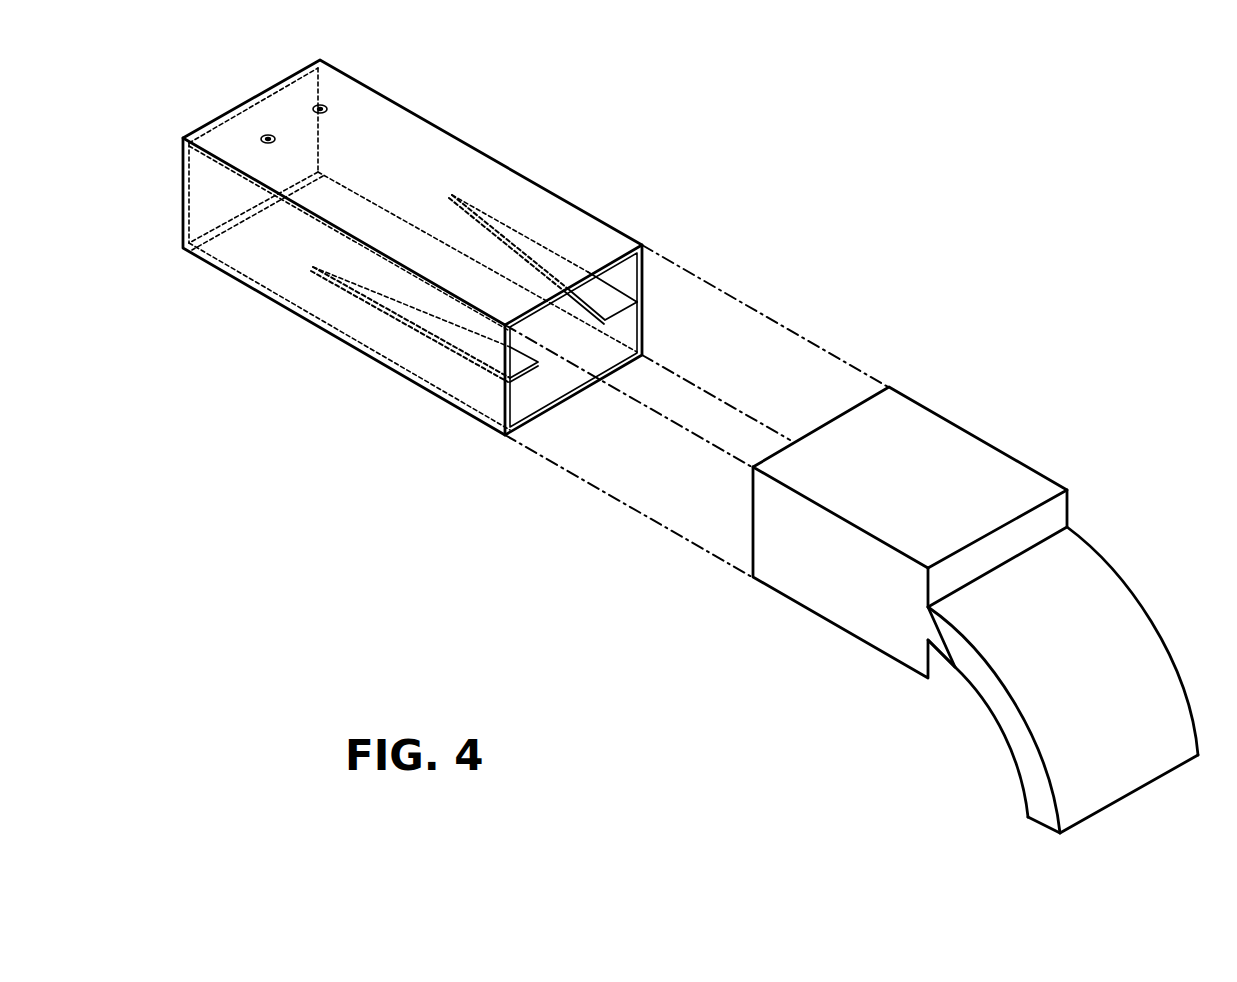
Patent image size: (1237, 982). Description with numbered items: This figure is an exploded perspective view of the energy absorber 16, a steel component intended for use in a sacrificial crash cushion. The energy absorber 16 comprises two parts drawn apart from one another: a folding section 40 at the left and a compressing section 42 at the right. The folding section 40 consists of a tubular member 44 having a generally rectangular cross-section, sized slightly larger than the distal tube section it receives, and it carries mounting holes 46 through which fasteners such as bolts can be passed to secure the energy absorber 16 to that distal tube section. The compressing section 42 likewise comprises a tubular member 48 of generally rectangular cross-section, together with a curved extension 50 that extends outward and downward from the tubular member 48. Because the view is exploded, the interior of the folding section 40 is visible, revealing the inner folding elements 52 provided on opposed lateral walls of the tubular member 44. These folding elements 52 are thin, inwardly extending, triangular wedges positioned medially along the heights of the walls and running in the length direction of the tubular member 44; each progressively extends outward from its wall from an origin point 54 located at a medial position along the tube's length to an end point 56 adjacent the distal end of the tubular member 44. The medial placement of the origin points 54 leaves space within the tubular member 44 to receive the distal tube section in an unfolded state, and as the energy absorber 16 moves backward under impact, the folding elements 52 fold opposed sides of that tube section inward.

The energy absorber 16 is at (1086, 166).
The folding section 40 is at (535, 117).
The compressing section 42 is at (1093, 452).
The tubular member 44 is at (330, 312).
The mounting holes 46 is at (316, 106).
The tubular member 48 is at (835, 608).
The curved extension 50 is at (1196, 609).
The inner folding elements 52 is at (536, 222).
The origin point 54 is at (452, 195).
The end point 56 is at (645, 326).